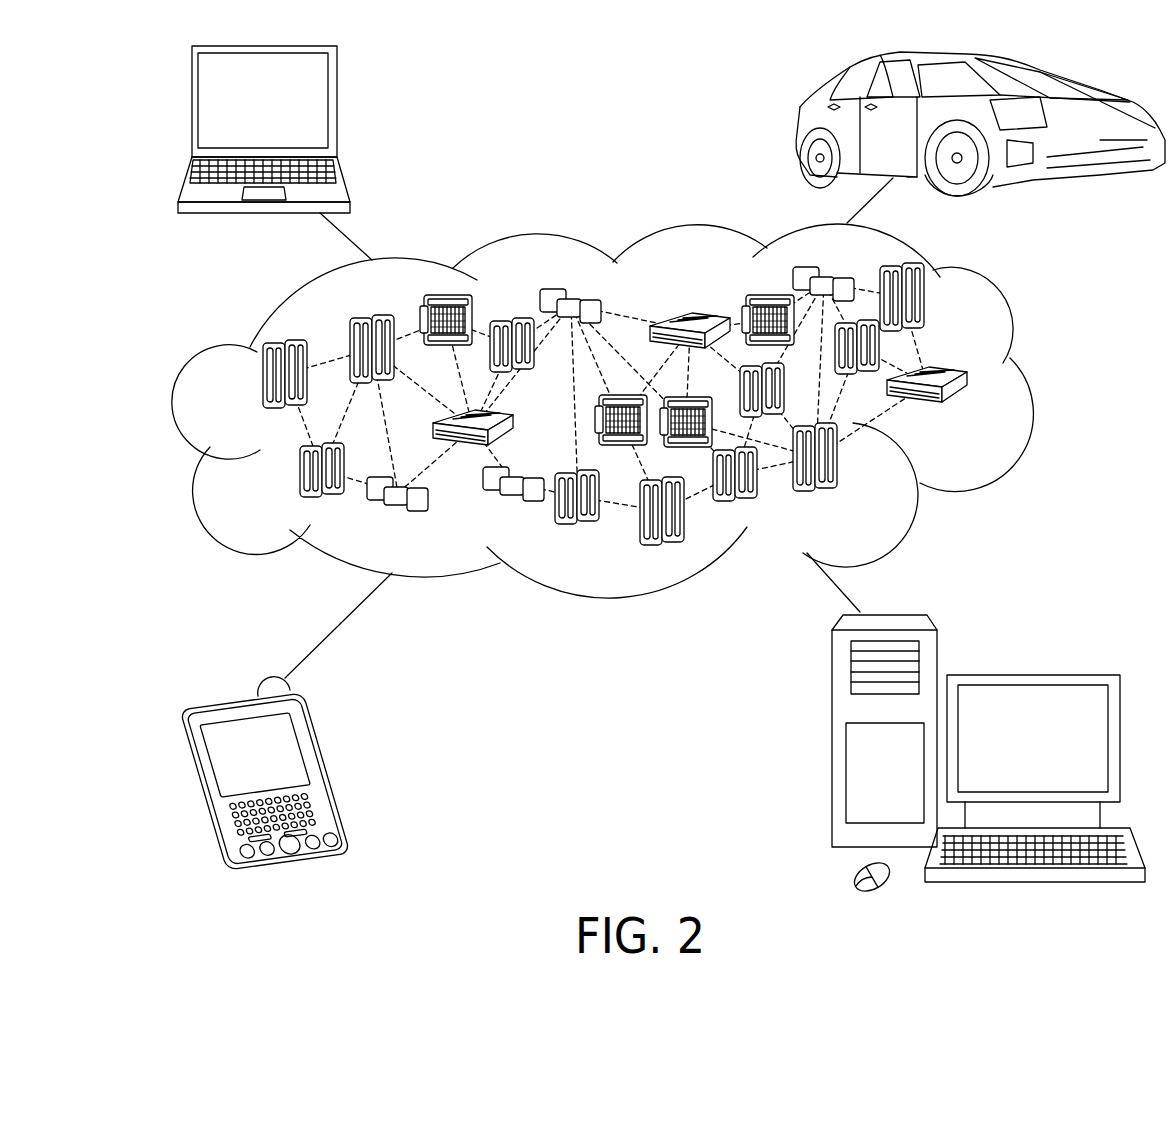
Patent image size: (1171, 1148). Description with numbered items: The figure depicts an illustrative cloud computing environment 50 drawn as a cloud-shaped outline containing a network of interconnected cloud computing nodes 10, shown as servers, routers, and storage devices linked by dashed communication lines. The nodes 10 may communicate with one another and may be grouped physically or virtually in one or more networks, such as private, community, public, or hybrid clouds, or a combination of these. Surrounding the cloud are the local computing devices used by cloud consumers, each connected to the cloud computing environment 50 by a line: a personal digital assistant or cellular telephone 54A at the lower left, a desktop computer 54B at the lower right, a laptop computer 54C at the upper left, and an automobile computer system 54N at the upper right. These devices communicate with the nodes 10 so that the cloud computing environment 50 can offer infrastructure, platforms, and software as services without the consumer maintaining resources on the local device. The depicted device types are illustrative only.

The cloud computing nodes 10 is at (968, 415).
The cloud computing environment 50 is at (1032, 385).
The personal digital assistant (PDA) or cellular telephone 54A is at (323, 768).
The desktop computer 54B is at (1030, 675).
The laptop computer 54C is at (337, 112).
The automobile computer system 54N is at (800, 127).